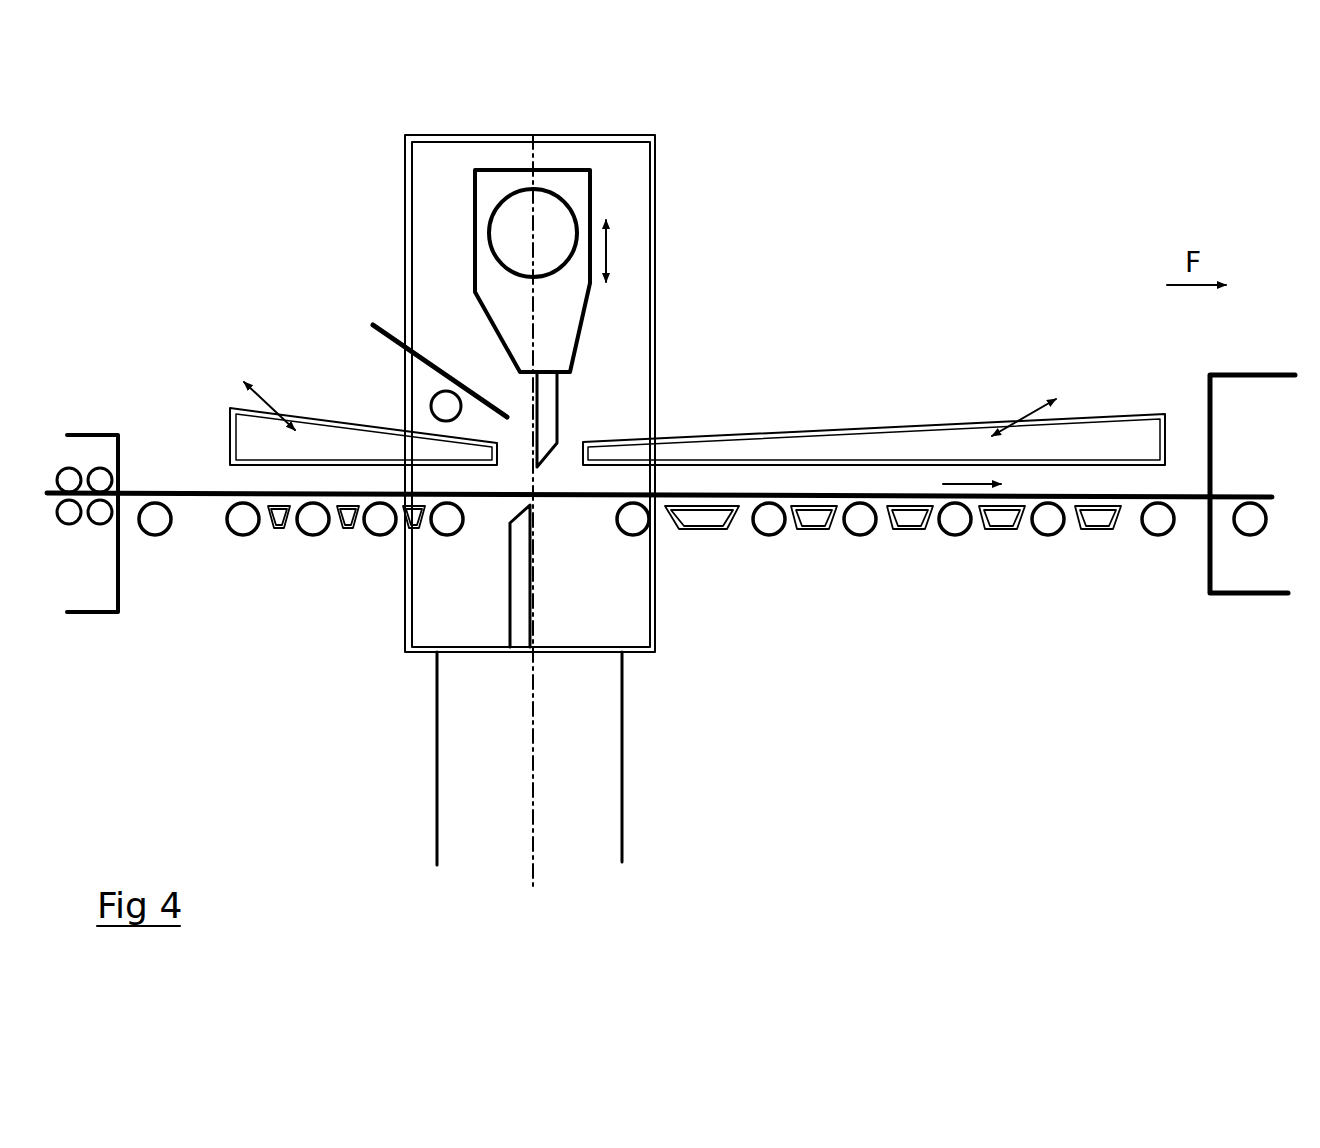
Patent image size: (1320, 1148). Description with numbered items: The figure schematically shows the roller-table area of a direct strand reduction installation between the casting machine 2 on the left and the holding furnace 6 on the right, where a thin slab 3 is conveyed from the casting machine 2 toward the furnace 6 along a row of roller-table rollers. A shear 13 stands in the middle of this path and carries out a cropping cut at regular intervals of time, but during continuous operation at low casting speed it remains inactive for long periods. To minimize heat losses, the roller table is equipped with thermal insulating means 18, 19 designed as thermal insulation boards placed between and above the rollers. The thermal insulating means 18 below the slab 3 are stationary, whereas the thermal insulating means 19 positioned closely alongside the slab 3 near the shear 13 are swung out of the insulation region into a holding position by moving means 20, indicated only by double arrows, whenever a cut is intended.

The casting machine 2 is at (70, 290).
The thin slab 3 is at (202, 497).
The holding furnace 6 is at (1289, 265).
The shear 13 is at (675, 236).
The stationary thermal insulating means 18 is at (412, 528).
The movable thermal insulating means 19 is at (337, 438).
The moving means 20 is at (258, 392).